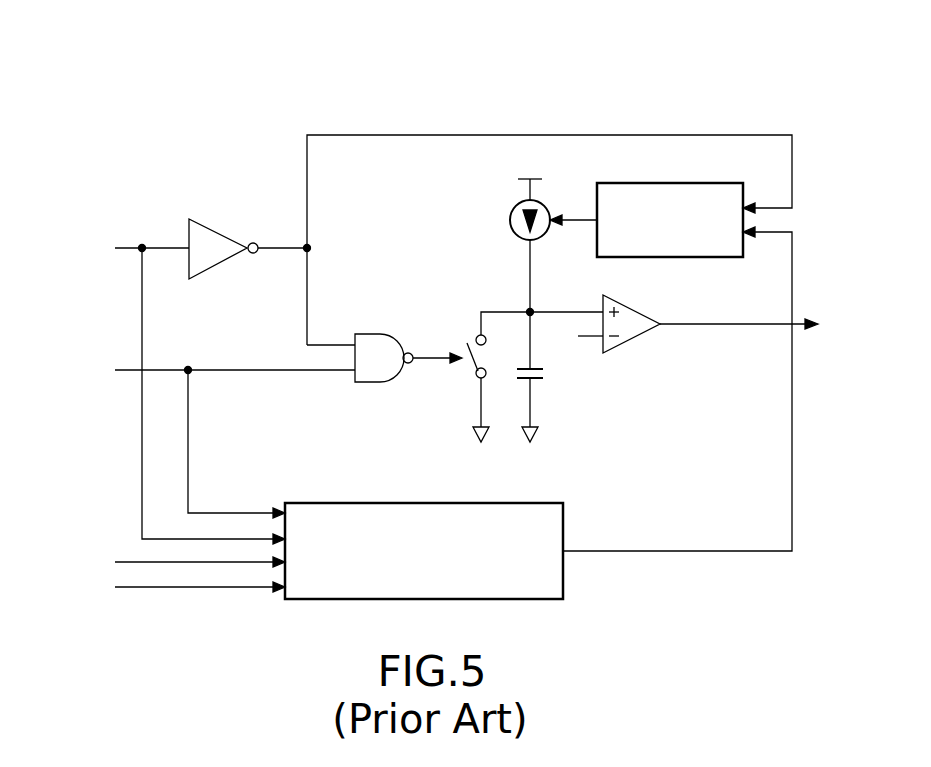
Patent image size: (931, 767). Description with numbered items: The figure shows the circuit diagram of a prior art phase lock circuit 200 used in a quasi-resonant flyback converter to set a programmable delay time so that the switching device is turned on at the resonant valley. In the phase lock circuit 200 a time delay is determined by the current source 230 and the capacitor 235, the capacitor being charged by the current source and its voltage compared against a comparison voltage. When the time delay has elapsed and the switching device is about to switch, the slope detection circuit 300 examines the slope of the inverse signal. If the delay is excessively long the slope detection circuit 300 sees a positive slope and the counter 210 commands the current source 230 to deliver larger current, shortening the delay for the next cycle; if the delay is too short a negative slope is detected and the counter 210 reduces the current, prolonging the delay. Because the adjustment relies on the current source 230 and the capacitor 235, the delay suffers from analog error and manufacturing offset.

The phase lock circuit 200 is at (450, 34).
The counter 210 is at (672, 183).
The current source 230 is at (510, 220).
The capacitor 235 is at (545, 376).
The slope detection circuit 300 is at (358, 503).